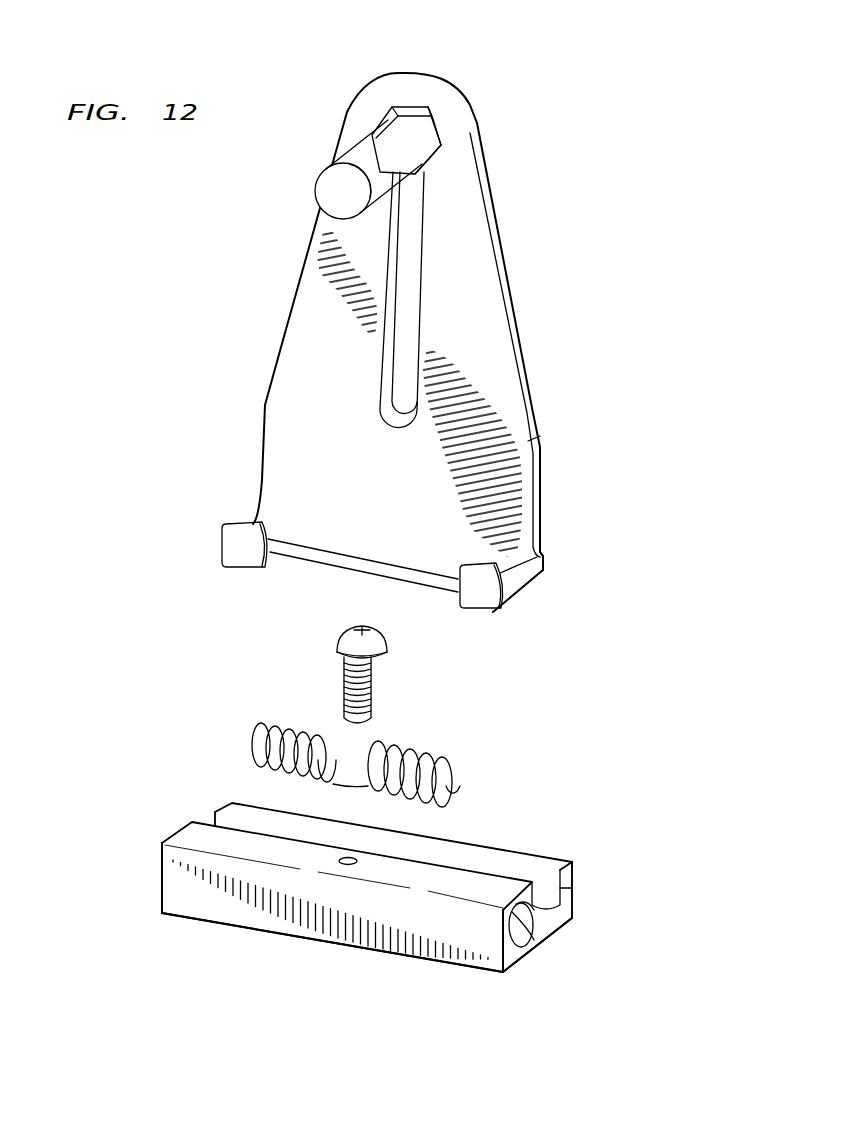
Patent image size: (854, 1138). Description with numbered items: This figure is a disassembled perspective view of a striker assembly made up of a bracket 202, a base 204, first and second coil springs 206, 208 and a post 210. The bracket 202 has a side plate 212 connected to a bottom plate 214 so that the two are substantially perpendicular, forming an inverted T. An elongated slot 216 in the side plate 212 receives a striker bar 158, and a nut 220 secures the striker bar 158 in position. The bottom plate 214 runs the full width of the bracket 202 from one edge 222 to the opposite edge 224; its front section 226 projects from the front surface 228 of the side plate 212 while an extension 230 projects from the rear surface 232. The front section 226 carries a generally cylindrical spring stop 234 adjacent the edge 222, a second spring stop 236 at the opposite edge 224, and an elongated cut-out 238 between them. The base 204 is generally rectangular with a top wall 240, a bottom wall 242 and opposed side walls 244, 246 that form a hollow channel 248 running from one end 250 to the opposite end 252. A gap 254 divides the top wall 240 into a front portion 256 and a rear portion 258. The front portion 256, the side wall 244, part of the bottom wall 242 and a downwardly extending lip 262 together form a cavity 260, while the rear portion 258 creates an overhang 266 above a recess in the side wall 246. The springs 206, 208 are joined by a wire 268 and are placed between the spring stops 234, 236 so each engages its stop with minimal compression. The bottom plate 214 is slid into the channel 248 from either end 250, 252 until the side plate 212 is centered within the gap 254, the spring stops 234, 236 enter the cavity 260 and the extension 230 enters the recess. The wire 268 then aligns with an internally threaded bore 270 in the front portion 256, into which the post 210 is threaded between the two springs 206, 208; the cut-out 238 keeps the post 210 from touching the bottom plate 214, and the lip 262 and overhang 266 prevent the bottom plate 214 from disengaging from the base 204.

The striker bar 158 is at (316, 186).
The bracket 202 is at (428, 345).
The base 204 is at (399, 893).
The first coil spring 206 is at (262, 740).
The second coil spring 208 is at (452, 768).
The post 210 is at (372, 690).
The side plate 212 is at (418, 321).
The bottom plate 214 is at (388, 556).
The elongated slot 216 is at (415, 193).
The nut 220 is at (412, 112).
The edge 222 is at (262, 442).
The opposite edge 224 is at (541, 440).
The front section 226 is at (297, 520).
The front surface 228 is at (322, 438).
The extension 230 is at (546, 560).
The rear surface 232 is at (542, 488).
The spring stop 234 is at (222, 546).
The second spring stop 236 is at (478, 604).
The elongated cut-out 238 is at (318, 574).
The top wall 240 is at (399, 895).
The bottom wall 242 is at (186, 919).
The side wall 244 is at (230, 905).
The side wall 246 is at (580, 887).
The channel 248 is at (582, 922).
The end 250 is at (160, 871).
The opposite end 252 is at (508, 978).
The gap 254 is at (544, 895).
The front portion 256 is at (420, 920).
The rear portion 258 is at (232, 808).
The cavity 260 is at (524, 946).
The lip 262 is at (530, 912).
The overhang 266 is at (574, 893).
The wire 268 is at (370, 778).
The internally threaded bore 270 is at (346, 865).